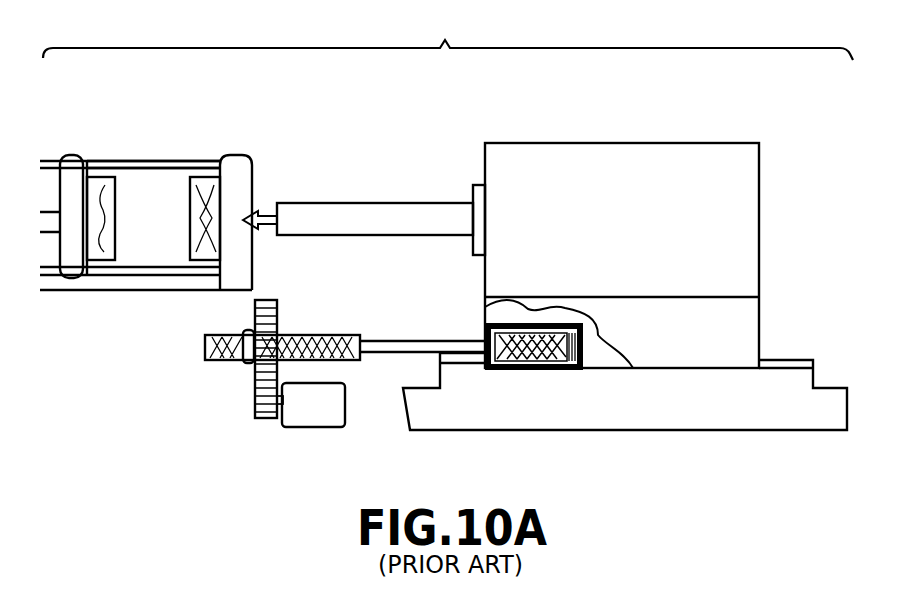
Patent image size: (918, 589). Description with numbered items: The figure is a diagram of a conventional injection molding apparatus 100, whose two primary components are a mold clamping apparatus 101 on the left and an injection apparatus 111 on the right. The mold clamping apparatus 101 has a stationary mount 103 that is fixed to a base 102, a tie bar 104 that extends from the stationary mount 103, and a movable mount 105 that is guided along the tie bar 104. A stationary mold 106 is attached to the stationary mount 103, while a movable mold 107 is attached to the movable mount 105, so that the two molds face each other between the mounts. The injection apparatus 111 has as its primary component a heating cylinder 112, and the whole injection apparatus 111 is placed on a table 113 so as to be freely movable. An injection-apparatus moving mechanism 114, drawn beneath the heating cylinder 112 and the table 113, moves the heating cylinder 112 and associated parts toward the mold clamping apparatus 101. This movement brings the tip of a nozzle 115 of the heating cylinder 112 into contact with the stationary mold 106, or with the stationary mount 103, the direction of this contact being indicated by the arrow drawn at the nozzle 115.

The injection molding apparatus 100 is at (448, 35).
The mold clamping apparatus 101 is at (182, 140).
The base 102 is at (138, 292).
The stationary mount 103 is at (233, 160).
The tie bar 104 is at (147, 161).
The movable mount 105 is at (72, 161).
The stationary mold 106 is at (187, 218).
The movable mold 107 is at (117, 222).
The injection apparatus 111 is at (658, 126).
The heating cylinder 112 is at (358, 218).
The table 113 is at (623, 405).
The injection-apparatus moving mechanism 114 is at (308, 438).
The nozzle 115 is at (265, 212).